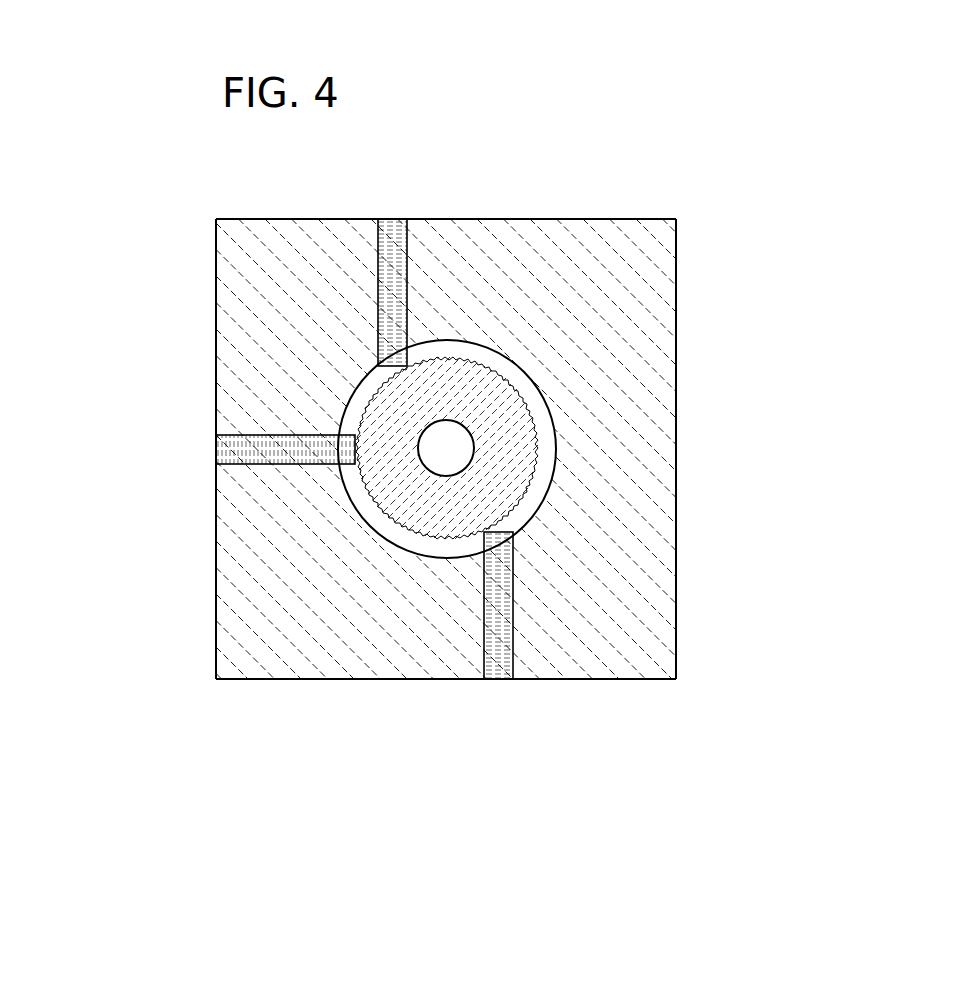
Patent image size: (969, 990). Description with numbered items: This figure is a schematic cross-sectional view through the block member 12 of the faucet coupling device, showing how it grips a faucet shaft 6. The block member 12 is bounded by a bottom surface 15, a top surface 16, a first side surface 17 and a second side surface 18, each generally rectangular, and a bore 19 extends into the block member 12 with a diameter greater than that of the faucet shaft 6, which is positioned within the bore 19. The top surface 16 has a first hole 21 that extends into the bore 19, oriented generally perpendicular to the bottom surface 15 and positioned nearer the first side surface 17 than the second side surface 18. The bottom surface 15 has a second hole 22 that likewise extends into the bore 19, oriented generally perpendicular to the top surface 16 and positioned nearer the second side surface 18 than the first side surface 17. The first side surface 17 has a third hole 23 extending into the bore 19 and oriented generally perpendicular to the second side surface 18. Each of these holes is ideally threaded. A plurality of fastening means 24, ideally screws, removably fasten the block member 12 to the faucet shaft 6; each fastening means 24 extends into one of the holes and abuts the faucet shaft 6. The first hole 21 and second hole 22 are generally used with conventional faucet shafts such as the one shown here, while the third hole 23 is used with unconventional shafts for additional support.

The block member 12 is at (200, 688).
The bottom surface 15 is at (392, 680).
The top surface 16 is at (512, 219).
The first side surface 17 is at (217, 356).
The second side surface 18 is at (676, 420).
The bore 19 is at (508, 365).
The faucet shaft 6 is at (510, 484).
The first hole 21 is at (405, 182).
The second hole 22 is at (497, 706).
The third hole 23 is at (192, 450).
The fastening means 24 is at (398, 344).